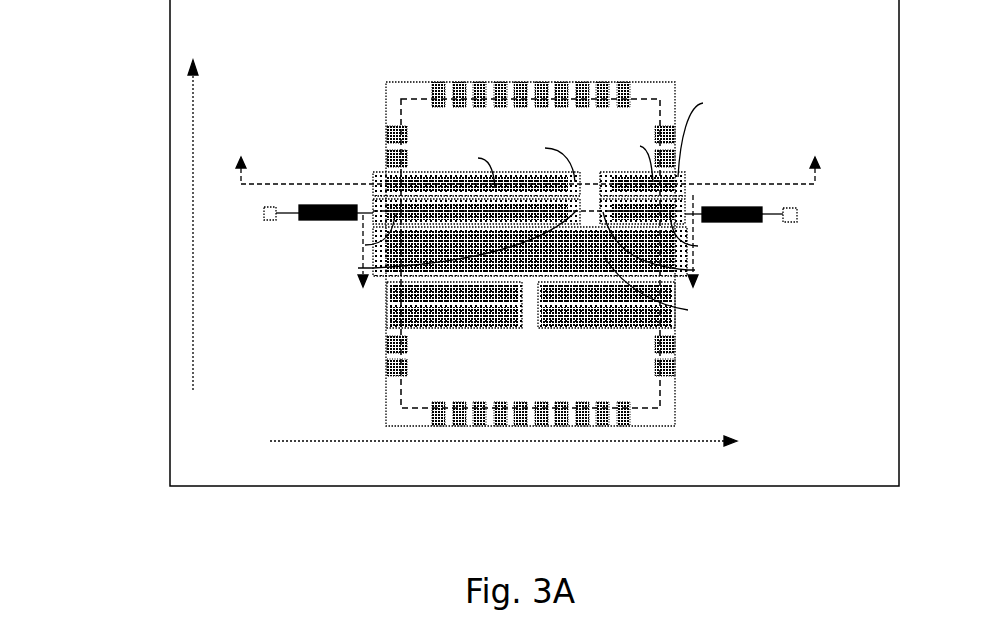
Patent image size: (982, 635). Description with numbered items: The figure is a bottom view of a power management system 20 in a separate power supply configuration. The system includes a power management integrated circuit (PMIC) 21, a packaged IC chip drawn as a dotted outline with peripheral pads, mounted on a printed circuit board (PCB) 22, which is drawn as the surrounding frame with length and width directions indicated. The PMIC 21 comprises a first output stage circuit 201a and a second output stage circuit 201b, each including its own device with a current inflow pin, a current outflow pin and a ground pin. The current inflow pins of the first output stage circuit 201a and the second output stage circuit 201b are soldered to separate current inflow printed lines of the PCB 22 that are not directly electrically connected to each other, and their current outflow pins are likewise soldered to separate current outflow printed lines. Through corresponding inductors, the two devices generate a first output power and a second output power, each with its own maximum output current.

The power management system 20 is at (817, 513).
The power management integrated circuit (PMIC) 21 is at (400, 82).
The printed circuit board (PCB) 22 is at (207, 449).
The first output stage circuit 201a is at (100, 505).
The second output stage circuit 201b is at (270, 505).